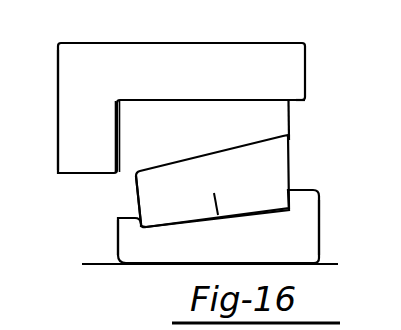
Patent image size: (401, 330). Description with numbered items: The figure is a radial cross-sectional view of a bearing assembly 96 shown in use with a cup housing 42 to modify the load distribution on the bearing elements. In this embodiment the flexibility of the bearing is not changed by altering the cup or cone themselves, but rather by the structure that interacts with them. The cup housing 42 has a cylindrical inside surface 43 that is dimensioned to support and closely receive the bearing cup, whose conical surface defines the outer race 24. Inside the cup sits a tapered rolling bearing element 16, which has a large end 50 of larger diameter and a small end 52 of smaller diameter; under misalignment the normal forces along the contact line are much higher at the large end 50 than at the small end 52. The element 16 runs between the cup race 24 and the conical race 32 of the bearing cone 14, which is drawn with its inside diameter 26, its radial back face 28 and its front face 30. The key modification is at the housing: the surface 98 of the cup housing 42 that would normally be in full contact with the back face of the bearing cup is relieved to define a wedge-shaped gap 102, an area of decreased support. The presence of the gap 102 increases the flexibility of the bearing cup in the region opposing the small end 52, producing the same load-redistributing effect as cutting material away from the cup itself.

The bearing assembly 96 is at (47, 76).
The cup housing 42 is at (310, 70).
The cylindrical inside surface 43 is at (297, 103).
The race 24 is at (287, 138).
The large end 50 is at (287, 172).
The small end 52 is at (133, 181).
The race 32 is at (214, 193).
The tapered rolling bearing element 16 is at (130, 206).
The bearing inner race or cone 14 is at (332, 212).
The front face 30 is at (322, 238).
The back face 28 is at (118, 245).
The inside diameter 26 is at (183, 265).
The surface 98 is at (128, 158).
The wedge-shaped gap 102 is at (105, 158).